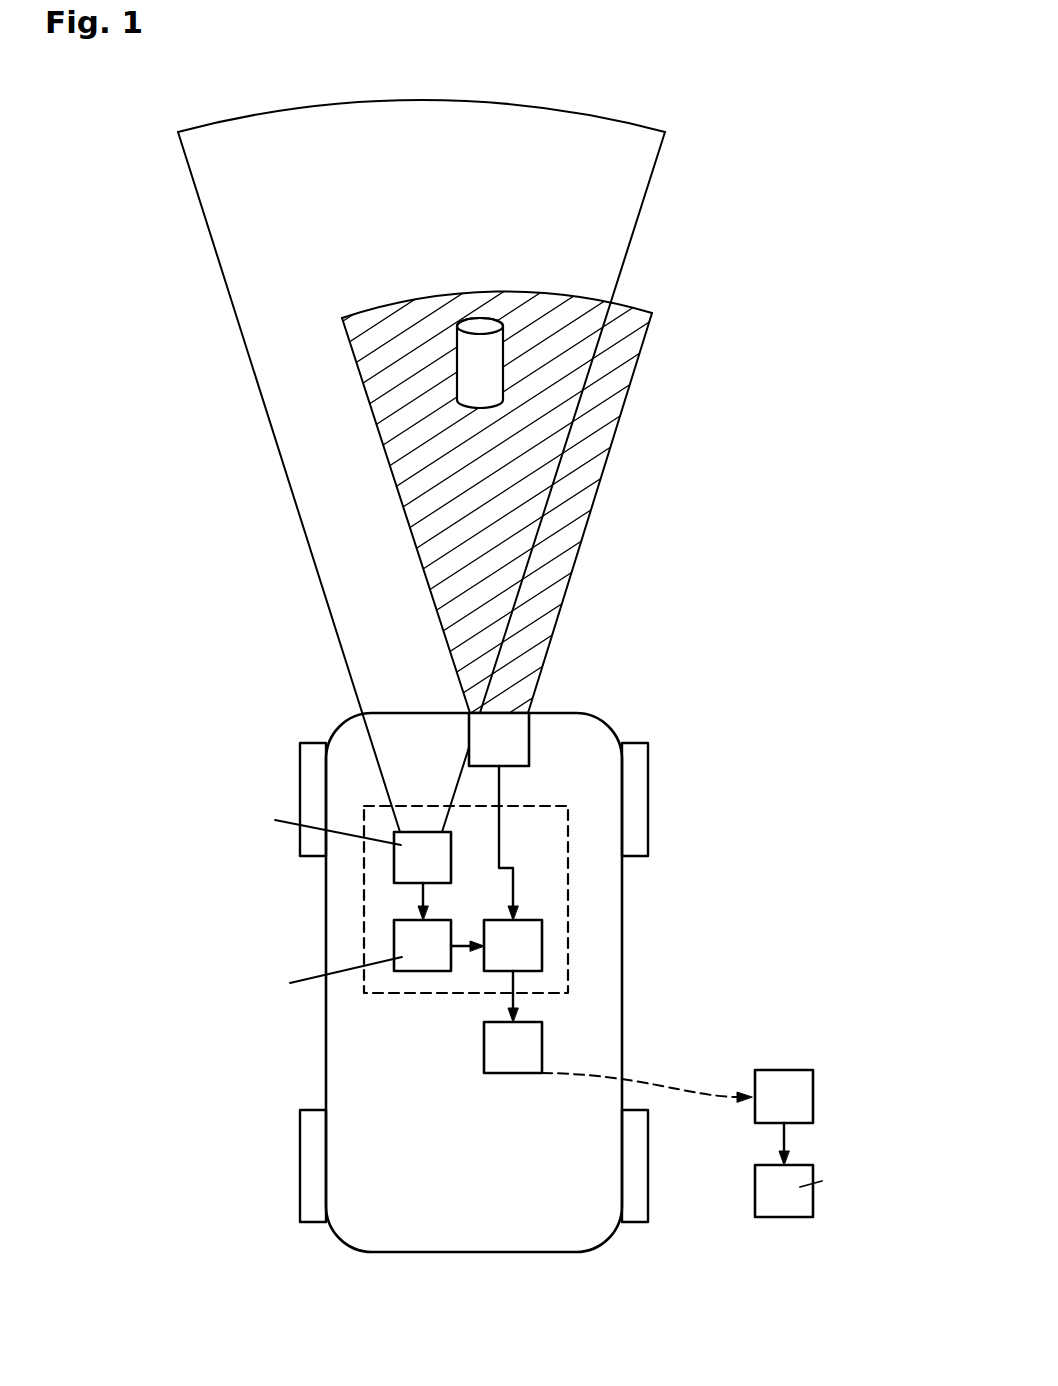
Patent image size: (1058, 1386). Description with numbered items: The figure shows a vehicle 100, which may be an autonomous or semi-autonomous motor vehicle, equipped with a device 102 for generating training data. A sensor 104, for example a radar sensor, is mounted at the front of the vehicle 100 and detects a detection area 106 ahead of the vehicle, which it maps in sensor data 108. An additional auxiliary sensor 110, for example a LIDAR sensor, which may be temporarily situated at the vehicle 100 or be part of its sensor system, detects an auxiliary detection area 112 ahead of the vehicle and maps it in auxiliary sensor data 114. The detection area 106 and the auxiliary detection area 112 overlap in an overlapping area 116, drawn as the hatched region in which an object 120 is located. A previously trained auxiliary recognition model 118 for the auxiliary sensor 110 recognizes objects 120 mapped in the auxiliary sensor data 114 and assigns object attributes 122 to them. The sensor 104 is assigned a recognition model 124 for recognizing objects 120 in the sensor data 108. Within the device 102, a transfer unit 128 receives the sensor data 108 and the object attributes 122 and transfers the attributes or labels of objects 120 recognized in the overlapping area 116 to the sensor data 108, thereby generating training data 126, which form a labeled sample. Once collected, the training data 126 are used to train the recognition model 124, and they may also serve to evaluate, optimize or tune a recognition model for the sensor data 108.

The vehicle 100 is at (326, 1058).
The device 102 is at (568, 908).
The sensor 104 is at (529, 745).
The detection area 106 is at (637, 375).
The sensor data 108 is at (513, 876).
The auxiliary sensor 110 is at (394, 861).
The auxiliary detection area 112 is at (300, 513).
The auxiliary sensor data 114 is at (423, 892).
The overlapping area 116 is at (410, 330).
The auxiliary recognition model 118 is at (394, 940).
The object 120 is at (473, 325).
The object attributes 122 is at (462, 948).
The recognition model 124 is at (784, 1217).
The training data 126 is at (542, 1060).
The transfer unit 128 is at (542, 950).